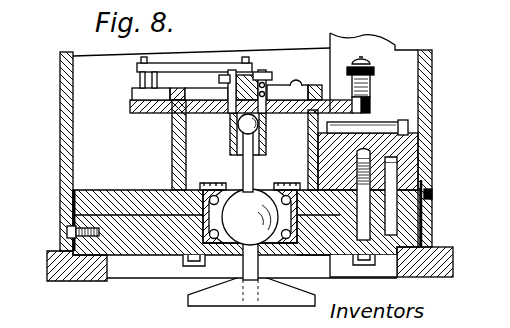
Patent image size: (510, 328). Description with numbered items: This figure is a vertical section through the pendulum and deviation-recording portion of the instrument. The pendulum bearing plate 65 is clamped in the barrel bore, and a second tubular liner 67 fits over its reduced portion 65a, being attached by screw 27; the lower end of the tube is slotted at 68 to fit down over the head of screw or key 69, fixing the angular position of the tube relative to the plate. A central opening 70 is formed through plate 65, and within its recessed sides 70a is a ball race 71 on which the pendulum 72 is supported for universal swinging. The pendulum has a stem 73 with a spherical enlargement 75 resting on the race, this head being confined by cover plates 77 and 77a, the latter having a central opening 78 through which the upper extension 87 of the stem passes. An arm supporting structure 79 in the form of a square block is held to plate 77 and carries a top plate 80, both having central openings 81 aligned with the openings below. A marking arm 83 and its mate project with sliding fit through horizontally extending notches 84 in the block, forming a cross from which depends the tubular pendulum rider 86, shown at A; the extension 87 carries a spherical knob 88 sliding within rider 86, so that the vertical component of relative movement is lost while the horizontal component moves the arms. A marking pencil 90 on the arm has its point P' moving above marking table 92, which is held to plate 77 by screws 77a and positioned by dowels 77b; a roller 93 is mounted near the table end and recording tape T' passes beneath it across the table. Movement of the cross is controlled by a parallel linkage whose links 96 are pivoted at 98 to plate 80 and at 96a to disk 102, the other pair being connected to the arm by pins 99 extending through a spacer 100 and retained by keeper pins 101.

The pivots 98 is at (125, 56).
The recording tape T' is at (377, 69).
The second tubular liner 67 is at (433, 118).
The roller 93 is at (407, 110).
The pendulum bearing plate 65 is at (72, 282).
The cover plate 77 is at (143, 192).
The marking table 92 is at (420, 147).
The arm supporting structure 79 is at (172, 146).
The notches 84 is at (135, 113).
The slot 68 is at (70, 212).
The screw or key 69 is at (67, 232).
The ball race 71 is at (180, 258).
The cover plate / screws 77a is at (280, 193).
The central opening 78 is at (232, 180).
The central opening 70 is at (228, 254).
The recessed sides 70a is at (305, 248).
The stem 73 is at (258, 266).
The pendulum 72 is at (262, 300).
The spherical enlargement 75 is at (250, 217).
The upper extension of pendulum stem 87 is at (254, 175).
The tubular pendulum rider 86 is at (266, 145).
The spherical knob 88 is at (259, 124).
The tubular pendulum rider location A is at (224, 136).
The top plate 80 is at (131, 93).
The spacer 100 is at (216, 88).
The parallel bars or links 96 is at (180, 70).
The pivot 96a is at (248, 57).
The disk 102 is at (240, 78).
The keeper pins 101 is at (228, 75).
The pins 99 is at (264, 84).
The marking arm 83 is at (283, 85).
The central openings 81 is at (284, 91).
The marking pencil or stylus 90 is at (380, 93).
The marking pencil point P' is at (367, 117).
The screw 27 is at (432, 196).
The dowels 77b is at (433, 198).
The reduced portion 65a is at (416, 236).